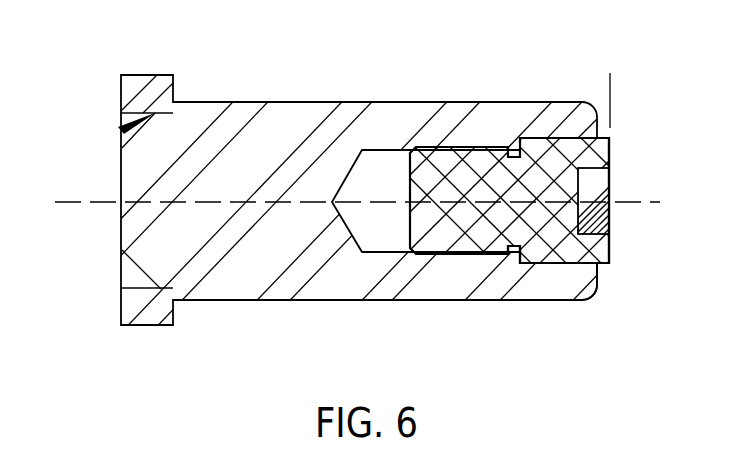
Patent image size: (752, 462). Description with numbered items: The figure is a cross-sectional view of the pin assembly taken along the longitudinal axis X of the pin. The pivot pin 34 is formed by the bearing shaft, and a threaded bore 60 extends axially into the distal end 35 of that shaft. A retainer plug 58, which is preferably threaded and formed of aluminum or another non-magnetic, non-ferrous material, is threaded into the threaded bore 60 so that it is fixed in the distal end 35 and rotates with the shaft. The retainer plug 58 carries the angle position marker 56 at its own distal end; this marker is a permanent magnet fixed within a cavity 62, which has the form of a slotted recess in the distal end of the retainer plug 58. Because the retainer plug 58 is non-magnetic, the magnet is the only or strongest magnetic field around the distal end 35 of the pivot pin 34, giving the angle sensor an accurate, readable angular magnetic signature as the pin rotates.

The pivot pin 34 is at (299, 94).
The threaded bore 60 is at (408, 147).
The cavity 62 is at (608, 150).
The angle position marker 56 is at (610, 175).
The distal end 35 is at (598, 277).
The retainer plug 58 is at (539, 256).
The longitudinal axis X is at (80, 203).